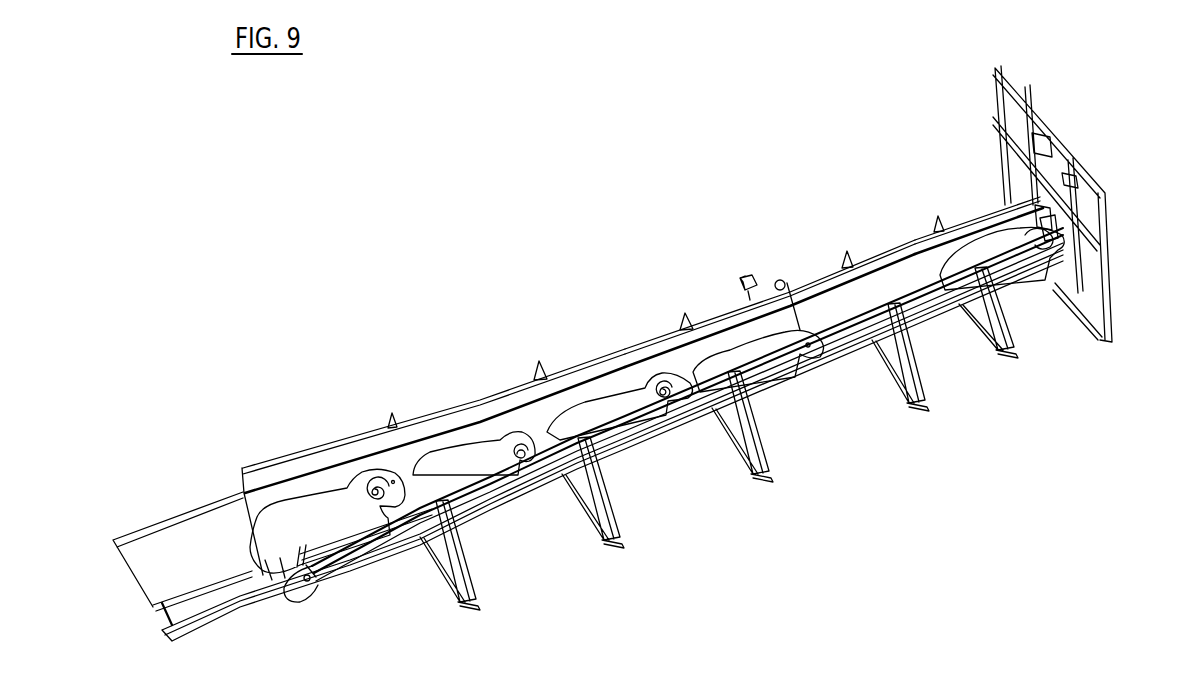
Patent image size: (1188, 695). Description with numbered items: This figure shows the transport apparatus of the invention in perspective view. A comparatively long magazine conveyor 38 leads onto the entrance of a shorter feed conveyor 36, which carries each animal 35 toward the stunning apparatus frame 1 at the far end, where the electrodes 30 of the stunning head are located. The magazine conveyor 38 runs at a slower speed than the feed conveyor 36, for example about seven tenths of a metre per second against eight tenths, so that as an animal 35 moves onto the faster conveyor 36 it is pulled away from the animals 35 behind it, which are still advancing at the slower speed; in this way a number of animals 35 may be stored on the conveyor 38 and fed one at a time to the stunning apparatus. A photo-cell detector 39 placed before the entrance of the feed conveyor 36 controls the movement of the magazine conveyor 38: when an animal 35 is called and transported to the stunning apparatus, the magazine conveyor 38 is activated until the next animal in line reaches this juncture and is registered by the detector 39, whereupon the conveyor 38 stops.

The stunning apparatus frame 1 is at (1126, 301).
The electrodes 30 is at (1056, 238).
The animal 35 is at (973, 262).
The feed conveyor 36 is at (895, 274).
The magazine conveyor 38 is at (600, 386).
The photo-cell detector 39 is at (750, 278).